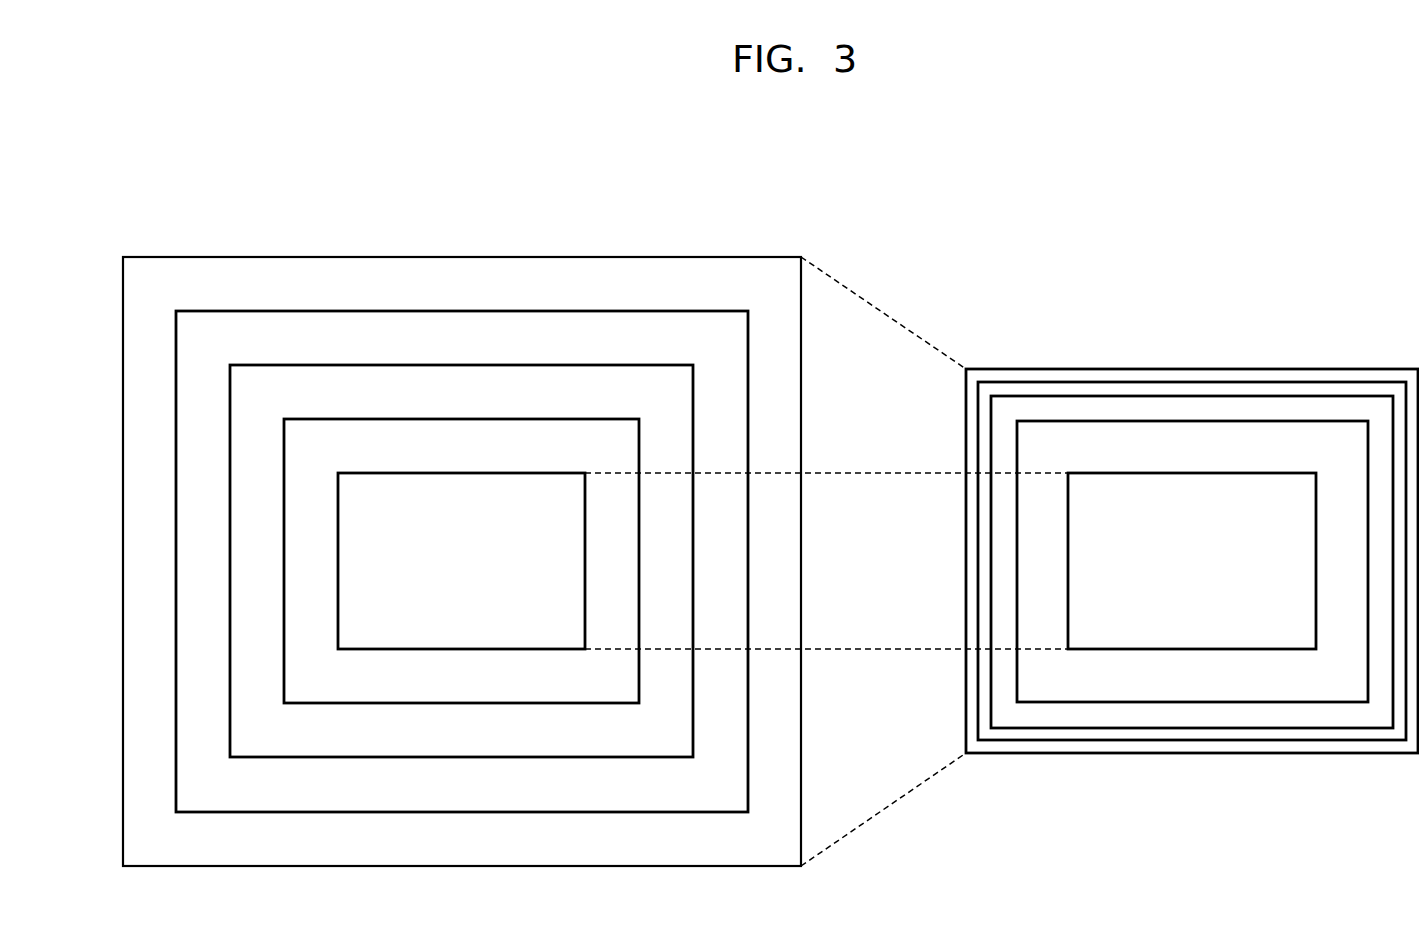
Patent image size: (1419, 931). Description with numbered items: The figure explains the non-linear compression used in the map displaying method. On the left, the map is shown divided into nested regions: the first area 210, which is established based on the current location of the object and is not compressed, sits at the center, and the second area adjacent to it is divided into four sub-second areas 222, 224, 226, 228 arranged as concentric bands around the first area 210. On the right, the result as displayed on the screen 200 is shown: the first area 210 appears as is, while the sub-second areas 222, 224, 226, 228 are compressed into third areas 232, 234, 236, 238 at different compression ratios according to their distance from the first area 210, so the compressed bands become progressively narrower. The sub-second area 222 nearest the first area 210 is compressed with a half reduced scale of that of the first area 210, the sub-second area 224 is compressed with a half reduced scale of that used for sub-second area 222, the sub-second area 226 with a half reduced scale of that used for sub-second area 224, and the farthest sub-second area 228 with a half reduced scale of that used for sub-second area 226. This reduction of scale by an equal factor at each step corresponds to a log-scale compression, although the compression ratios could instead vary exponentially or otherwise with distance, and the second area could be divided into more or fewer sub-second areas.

The screen 200 is at (1218, 200).
The first area 210 is at (482, 570).
The sub-second area 222 is at (482, 462).
The sub-second area 224 is at (482, 409).
The sub-second area 226 is at (482, 353).
The sub-second area 228 is at (482, 300).
The third area 232 is at (1130, 445).
The third area 234 is at (1187, 410).
The third area 236 is at (1245, 390).
The third area 238 is at (1303, 372).